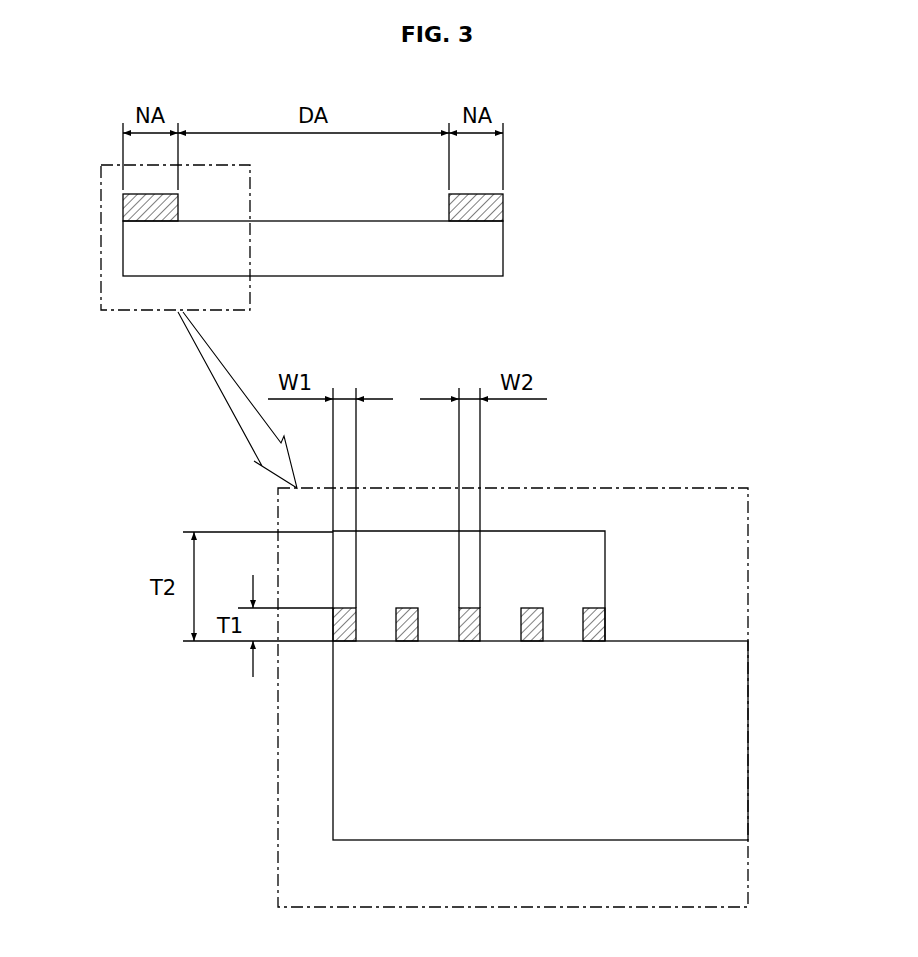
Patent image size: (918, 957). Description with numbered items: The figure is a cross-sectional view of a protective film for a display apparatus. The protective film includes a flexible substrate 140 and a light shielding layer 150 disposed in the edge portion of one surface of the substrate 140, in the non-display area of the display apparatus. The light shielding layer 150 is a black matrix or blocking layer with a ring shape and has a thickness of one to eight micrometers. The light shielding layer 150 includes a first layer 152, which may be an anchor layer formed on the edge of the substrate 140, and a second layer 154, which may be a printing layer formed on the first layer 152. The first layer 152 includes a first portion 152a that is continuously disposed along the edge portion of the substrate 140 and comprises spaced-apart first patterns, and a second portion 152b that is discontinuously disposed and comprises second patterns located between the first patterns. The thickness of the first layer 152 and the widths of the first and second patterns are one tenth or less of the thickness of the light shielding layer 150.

The substrate 140 is at (132, 250).
The light shielding layer 150 is at (123, 207).
The first layer 152 is at (511, 711).
The first portion 152a is at (345, 630).
The second portion 152b is at (467, 632).
The second layer 154 is at (600, 550).